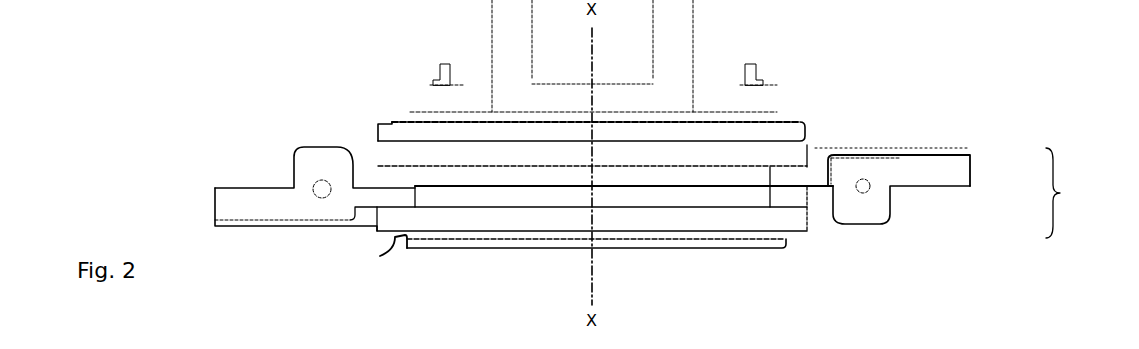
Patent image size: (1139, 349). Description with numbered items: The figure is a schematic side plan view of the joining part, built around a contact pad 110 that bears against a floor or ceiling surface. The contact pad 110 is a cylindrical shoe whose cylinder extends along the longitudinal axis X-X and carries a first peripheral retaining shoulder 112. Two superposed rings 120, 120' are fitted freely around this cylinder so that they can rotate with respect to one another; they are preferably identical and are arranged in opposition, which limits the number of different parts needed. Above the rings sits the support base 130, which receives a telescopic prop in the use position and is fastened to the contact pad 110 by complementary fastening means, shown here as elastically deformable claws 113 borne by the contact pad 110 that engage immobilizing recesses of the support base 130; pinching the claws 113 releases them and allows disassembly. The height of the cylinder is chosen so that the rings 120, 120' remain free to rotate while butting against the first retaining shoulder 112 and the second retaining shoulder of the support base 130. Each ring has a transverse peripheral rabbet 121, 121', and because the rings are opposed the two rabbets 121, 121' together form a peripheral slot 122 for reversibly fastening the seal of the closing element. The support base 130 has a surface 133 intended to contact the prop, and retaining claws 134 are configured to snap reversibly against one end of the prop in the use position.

The contact pad 110 is at (537, 249).
The first peripheral retaining shoulder 112 is at (380, 256).
The elastically deformable claws 113 is at (440, 77).
The ring 120 is at (540, 212).
The ring 120' is at (854, 155).
The transverse peripheral rabbet 121 is at (914, 201).
The transverse peripheral rabbet 121' is at (916, 167).
The peripheral slot 122 is at (1079, 193).
The support base 130 is at (797, 133).
The surface of the support base 133 is at (391, 121).
The retaining claws 134 is at (680, 43).